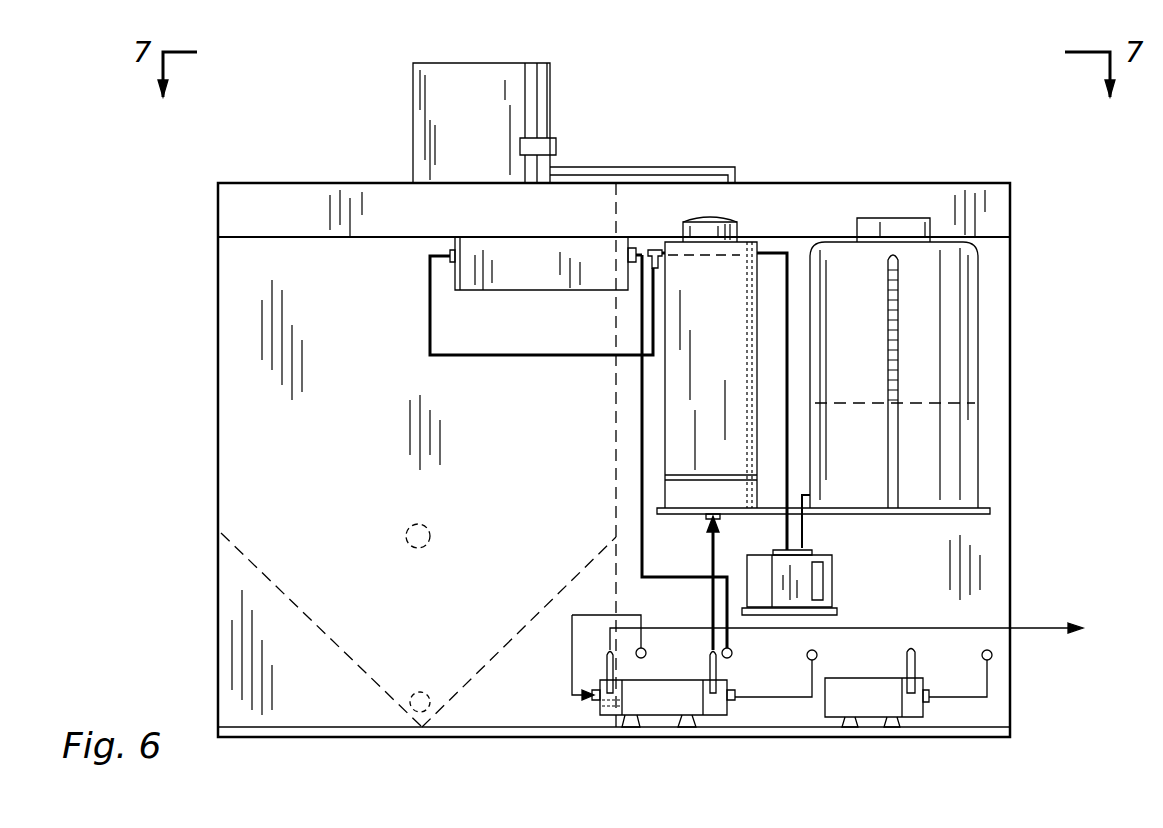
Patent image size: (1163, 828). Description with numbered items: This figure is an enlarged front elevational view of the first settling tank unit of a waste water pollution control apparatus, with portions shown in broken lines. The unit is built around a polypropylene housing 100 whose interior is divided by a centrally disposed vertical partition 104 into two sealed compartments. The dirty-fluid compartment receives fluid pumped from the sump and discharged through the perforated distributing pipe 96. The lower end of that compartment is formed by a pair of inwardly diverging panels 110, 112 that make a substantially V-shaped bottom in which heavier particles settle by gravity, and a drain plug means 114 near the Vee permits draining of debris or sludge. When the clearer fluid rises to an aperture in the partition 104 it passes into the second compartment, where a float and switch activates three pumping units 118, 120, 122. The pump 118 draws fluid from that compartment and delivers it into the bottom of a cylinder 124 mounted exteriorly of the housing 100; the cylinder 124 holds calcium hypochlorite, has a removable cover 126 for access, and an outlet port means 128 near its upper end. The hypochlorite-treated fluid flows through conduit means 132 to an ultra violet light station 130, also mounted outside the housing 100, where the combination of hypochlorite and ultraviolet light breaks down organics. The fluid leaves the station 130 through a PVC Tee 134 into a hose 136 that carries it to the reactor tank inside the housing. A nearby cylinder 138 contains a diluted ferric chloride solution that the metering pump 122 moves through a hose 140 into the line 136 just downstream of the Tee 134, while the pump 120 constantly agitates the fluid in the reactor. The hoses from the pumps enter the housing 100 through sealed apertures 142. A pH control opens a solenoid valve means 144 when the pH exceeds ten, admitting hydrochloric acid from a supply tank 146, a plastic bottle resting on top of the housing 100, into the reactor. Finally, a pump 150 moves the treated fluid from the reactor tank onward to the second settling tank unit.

The distributing pipe 96 is at (430, 536).
The housing 100 is at (218, 432).
The vertical partition 104 is at (616, 483).
The inwardly diverging panel 110 is at (517, 635).
The inwardly diverging panel 112 is at (330, 635).
The drain plug means 114 is at (418, 692).
The pump 118 is at (716, 716).
The pump 120 is at (877, 703).
The metering pump 122 is at (818, 600).
The cylinder 124 is at (690, 470).
The removable cover 126 is at (730, 222).
The outlet port means 128 is at (655, 248).
The ultra violet light station 130 is at (530, 275).
The conduit means 132 is at (520, 358).
The PVC Tee 134 is at (632, 246).
The hose 136 is at (640, 420).
The cylinder 138 is at (970, 342).
The hose 140 is at (787, 393).
The sealed apertures 142 is at (818, 655).
The solenoid valve means 144 is at (550, 142).
The hydrochloric acid supply tank 146 is at (418, 105).
The pump 150 is at (606, 716).